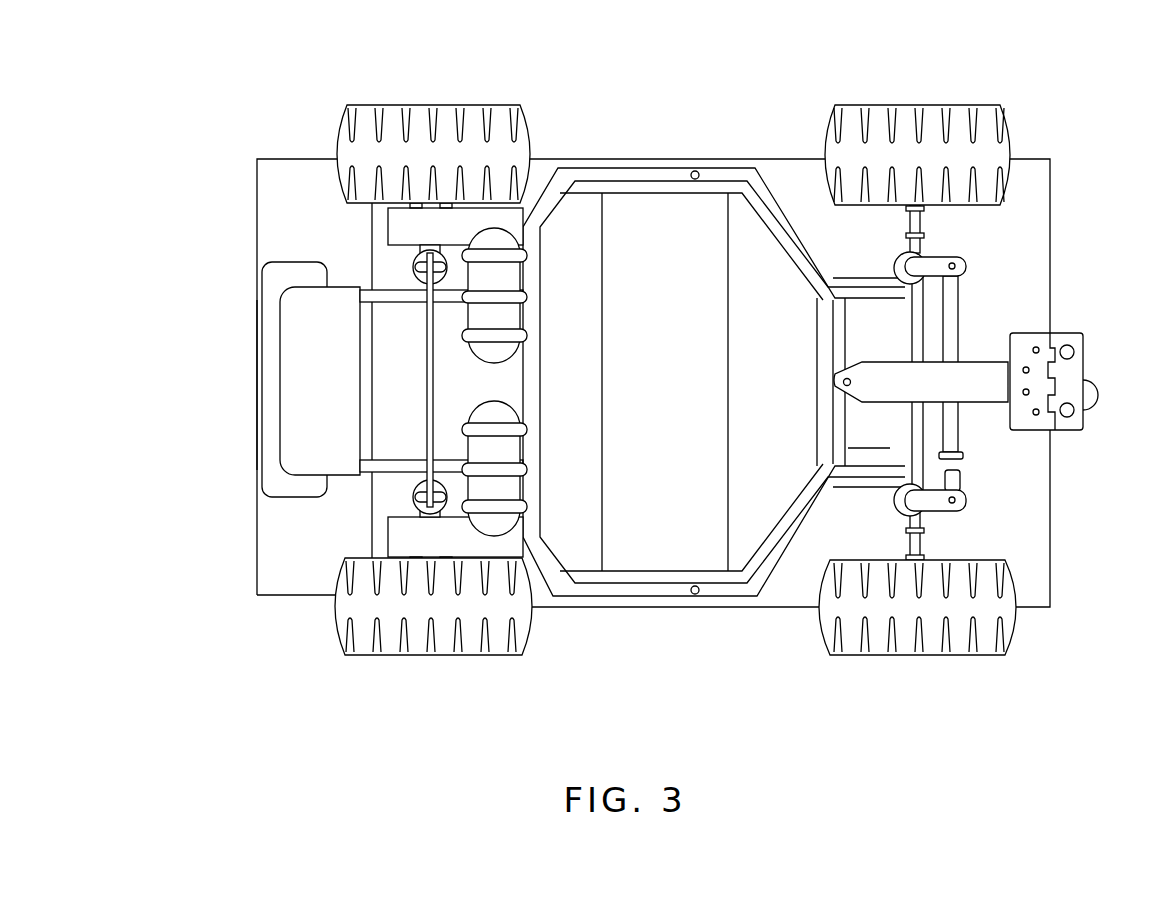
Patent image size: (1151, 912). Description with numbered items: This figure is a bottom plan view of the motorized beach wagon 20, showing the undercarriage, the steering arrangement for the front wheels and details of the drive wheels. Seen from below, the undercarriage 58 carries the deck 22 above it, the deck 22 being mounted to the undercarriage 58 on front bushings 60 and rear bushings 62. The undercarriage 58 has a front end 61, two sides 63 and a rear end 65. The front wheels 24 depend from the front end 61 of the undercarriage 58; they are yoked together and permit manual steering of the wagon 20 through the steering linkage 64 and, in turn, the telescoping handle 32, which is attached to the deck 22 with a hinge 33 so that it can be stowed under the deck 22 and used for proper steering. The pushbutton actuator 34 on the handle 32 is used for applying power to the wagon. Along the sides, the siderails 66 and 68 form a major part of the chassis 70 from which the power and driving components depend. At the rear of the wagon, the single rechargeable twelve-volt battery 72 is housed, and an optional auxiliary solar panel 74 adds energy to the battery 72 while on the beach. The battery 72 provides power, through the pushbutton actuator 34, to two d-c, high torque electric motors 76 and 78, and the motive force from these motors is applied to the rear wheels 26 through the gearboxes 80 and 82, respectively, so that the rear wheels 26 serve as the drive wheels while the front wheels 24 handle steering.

The motorized beach wagon 20 is at (652, 373).
The deck 22 is at (800, 585).
The front wheels 24 is at (1008, 140).
The rear wheels 26 is at (340, 640).
The telescoping handle 32 is at (1072, 343).
The hinge 33 is at (1052, 408).
The pushbutton actuator 34 is at (1098, 397).
The undercarriage 58 is at (733, 172).
The front bushings 60 is at (932, 243).
The front end 61 is at (957, 485).
The rear bushings 62 is at (413, 270).
The sides 63 is at (705, 195).
The steering linkage 64 is at (982, 392).
The rear end 65 is at (270, 402).
The siderail 66 is at (655, 183).
The siderail 68 is at (635, 580).
The chassis 70 is at (383, 467).
The battery 72 is at (313, 458).
The auxiliary solar panel 74 is at (283, 278).
The electric motor 76 is at (495, 238).
The electric motor 78 is at (495, 523).
The gearbox 80 is at (480, 218).
The gearbox 82 is at (468, 537).